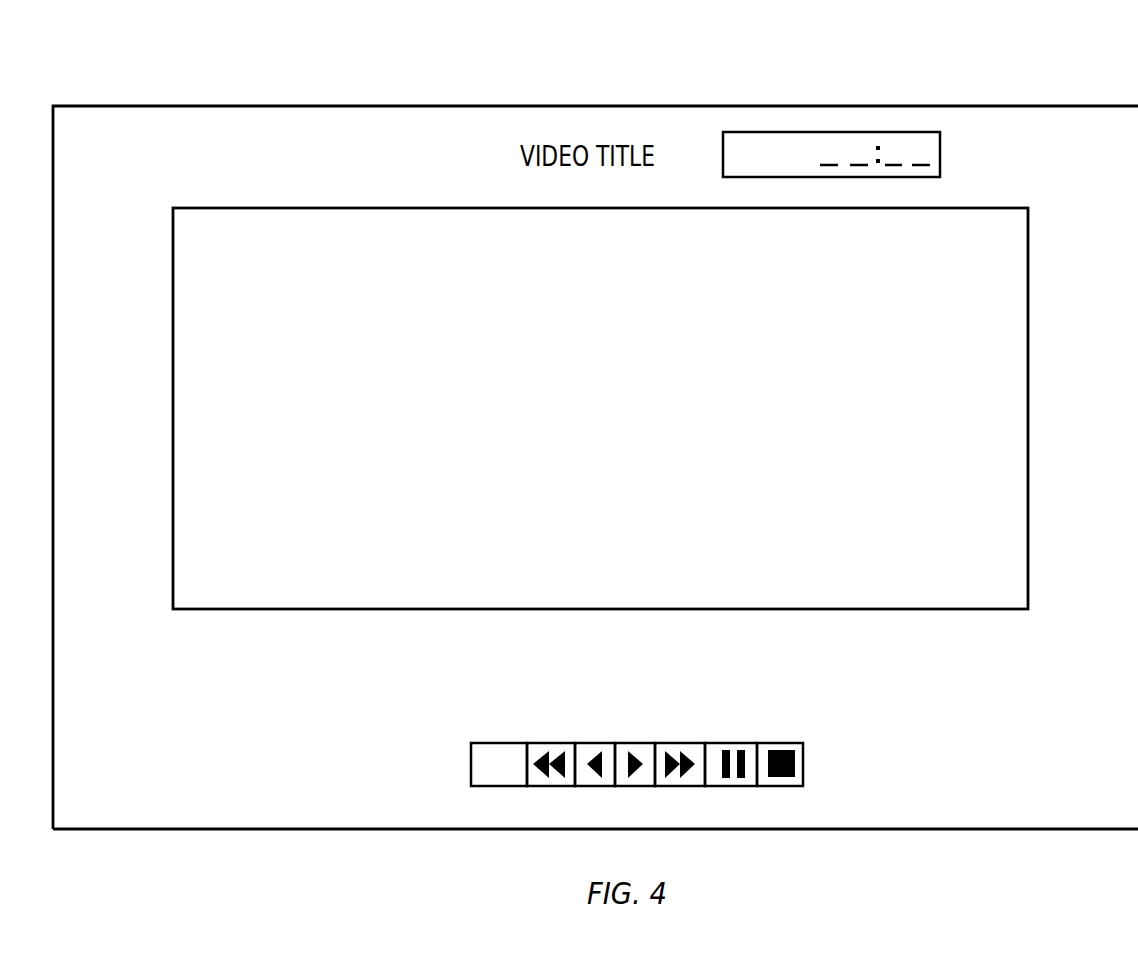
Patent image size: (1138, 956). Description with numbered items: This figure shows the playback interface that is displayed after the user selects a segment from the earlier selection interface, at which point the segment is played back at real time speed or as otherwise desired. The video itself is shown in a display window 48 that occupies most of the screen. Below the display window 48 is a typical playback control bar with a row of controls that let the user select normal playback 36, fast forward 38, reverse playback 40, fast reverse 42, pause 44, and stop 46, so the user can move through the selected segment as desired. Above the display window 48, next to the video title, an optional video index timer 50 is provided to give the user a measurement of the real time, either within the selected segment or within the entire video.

The normal playback control 36 is at (633, 742).
The fast forward control 38 is at (677, 742).
The reverse playback control 40 is at (592, 742).
The fast reverse control 42 is at (549, 742).
The pause control 44 is at (733, 742).
The stop control 46 is at (775, 742).
The display window 48 is at (1028, 327).
The video index timer 50 is at (853, 132).